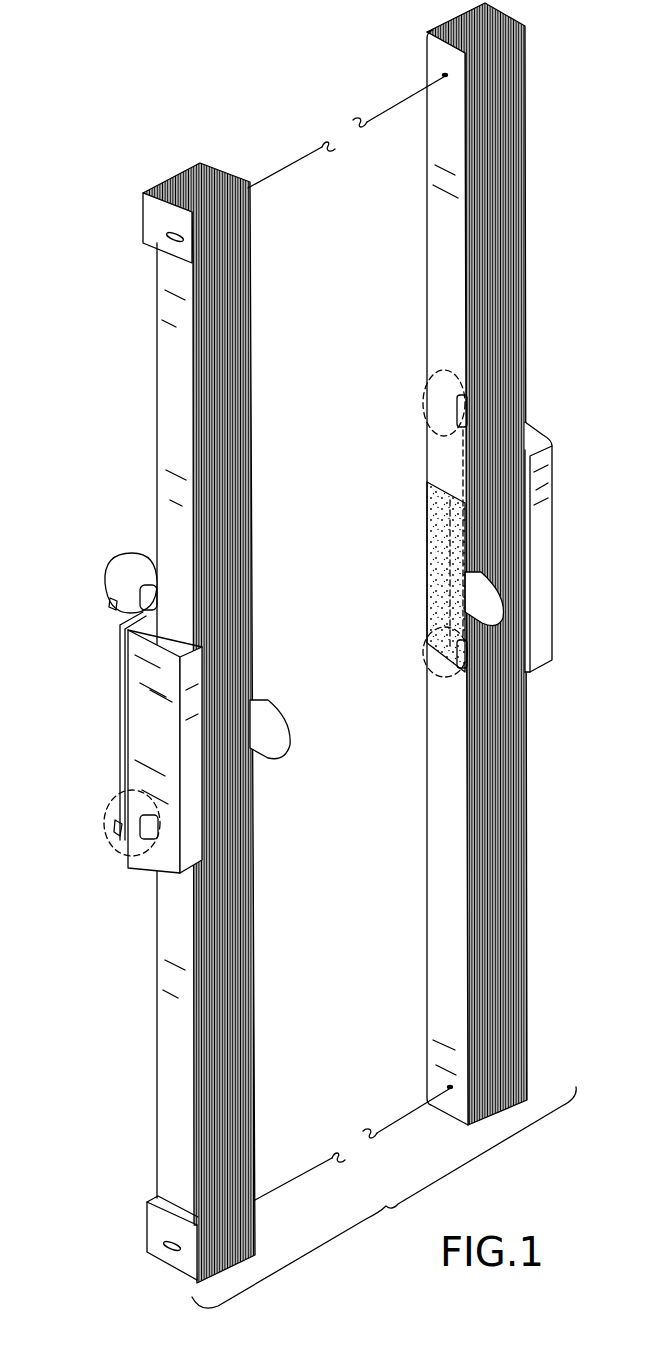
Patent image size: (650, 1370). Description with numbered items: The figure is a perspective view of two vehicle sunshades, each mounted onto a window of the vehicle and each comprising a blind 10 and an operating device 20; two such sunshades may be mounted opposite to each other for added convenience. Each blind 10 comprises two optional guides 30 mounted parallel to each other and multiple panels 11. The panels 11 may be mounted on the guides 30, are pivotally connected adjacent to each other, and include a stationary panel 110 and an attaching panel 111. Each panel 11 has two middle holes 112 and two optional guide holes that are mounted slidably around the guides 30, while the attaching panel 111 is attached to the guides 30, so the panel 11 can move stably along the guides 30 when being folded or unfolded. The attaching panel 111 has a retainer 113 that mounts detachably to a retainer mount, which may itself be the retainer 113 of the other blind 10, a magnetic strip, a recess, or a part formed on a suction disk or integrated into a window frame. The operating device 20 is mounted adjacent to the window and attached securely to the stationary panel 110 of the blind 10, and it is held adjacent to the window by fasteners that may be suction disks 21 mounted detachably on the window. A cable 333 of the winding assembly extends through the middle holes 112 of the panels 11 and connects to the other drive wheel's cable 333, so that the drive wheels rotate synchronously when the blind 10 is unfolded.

The blind 10 is at (337, 643).
The stationary panel 110 is at (178, 408).
The panel 11 is at (467, 564).
The attaching panel 111 is at (440, 222).
The middle hole 112 is at (405, 577).
The cable 333 is at (440, 543).
The retainer 113 is at (440, 598).
The operating device 20 is at (149, 738).
The suction disk 21 is at (125, 575).
The guide 30 is at (297, 160).